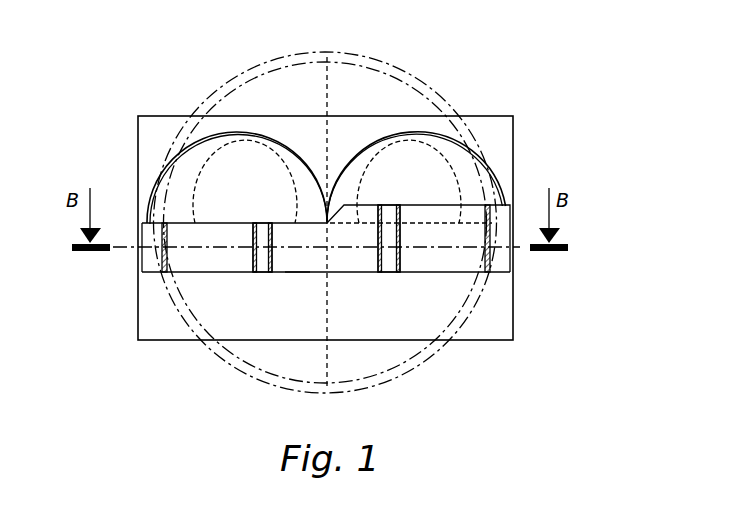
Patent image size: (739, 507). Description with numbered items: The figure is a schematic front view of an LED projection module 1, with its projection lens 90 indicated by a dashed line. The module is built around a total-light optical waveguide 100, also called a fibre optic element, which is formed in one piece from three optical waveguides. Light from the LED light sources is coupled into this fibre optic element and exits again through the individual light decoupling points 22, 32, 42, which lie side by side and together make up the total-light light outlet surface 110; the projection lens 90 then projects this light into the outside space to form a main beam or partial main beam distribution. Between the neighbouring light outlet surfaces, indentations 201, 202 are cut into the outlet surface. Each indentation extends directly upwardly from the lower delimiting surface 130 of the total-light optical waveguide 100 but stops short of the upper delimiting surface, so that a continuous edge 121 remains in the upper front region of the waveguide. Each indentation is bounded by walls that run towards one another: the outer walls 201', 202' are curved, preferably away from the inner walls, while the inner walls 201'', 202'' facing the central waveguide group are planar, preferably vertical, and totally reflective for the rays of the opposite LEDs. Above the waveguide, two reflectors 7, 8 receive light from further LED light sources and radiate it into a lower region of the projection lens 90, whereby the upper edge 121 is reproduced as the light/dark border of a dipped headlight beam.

The LED projection module 1 is at (84, 47).
The reflector 7 is at (393, 130).
The reflector 8 is at (212, 132).
The light decoupling point 22 is at (460, 222).
The light decoupling point 32 is at (178, 271).
The light decoupling point 42 is at (298, 271).
The projection lens 90 is at (428, 86).
The total-light optical waveguide 100 is at (470, 274).
The total-light light outlet surface 110 is at (178, 222).
The continuous edge 121 is at (298, 223).
The lower delimiting surface 130 is at (197, 272).
The indentation 201 is at (224, 314).
The outer wall 201' is at (192, 335).
The inner wall 201'' is at (250, 337).
The indentation 202 is at (432, 316).
The outer wall 202' is at (468, 291).
The inner wall 202'' is at (388, 318).